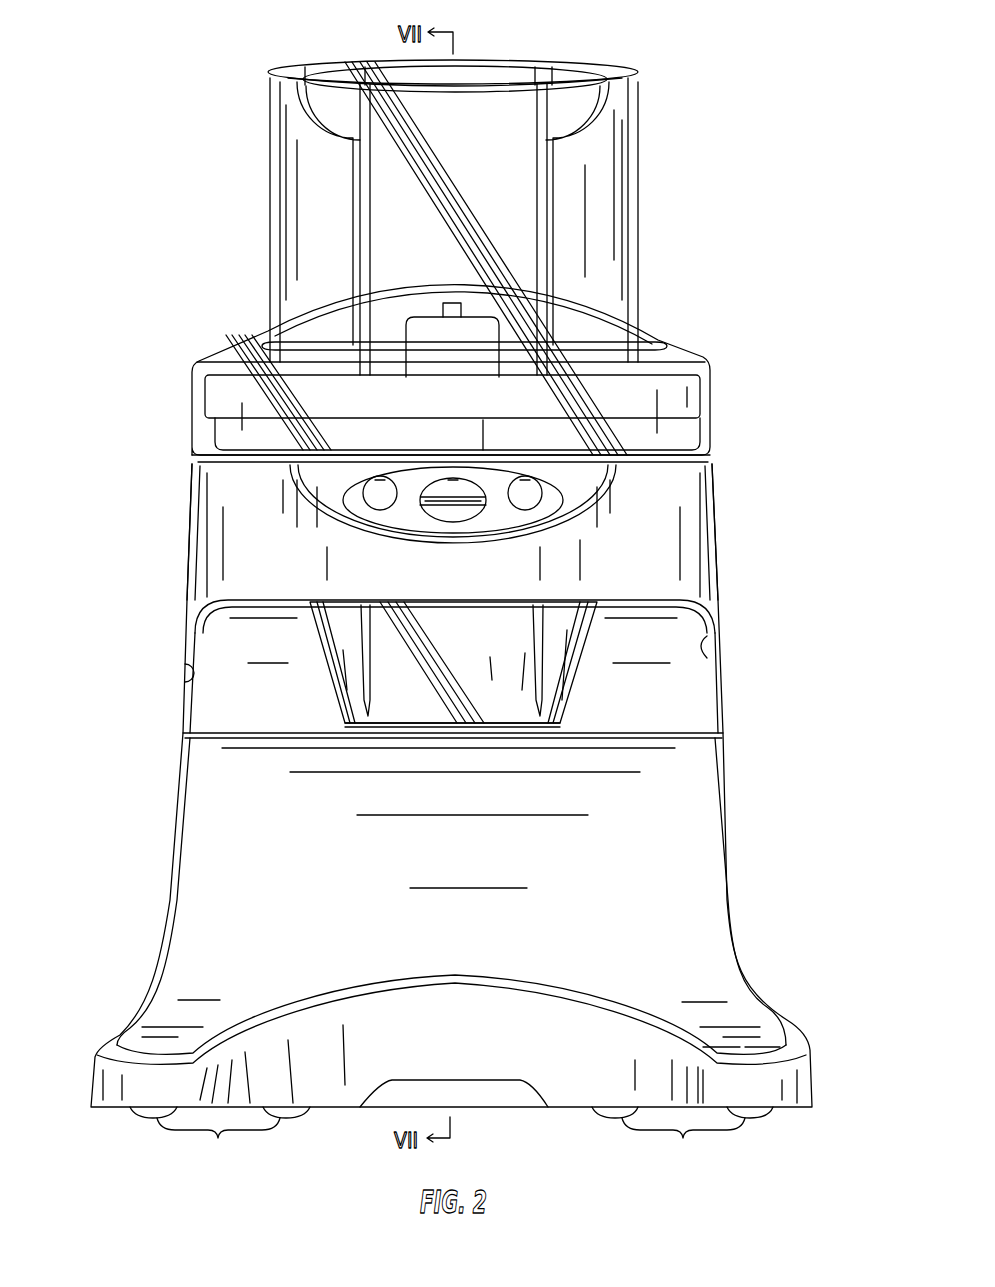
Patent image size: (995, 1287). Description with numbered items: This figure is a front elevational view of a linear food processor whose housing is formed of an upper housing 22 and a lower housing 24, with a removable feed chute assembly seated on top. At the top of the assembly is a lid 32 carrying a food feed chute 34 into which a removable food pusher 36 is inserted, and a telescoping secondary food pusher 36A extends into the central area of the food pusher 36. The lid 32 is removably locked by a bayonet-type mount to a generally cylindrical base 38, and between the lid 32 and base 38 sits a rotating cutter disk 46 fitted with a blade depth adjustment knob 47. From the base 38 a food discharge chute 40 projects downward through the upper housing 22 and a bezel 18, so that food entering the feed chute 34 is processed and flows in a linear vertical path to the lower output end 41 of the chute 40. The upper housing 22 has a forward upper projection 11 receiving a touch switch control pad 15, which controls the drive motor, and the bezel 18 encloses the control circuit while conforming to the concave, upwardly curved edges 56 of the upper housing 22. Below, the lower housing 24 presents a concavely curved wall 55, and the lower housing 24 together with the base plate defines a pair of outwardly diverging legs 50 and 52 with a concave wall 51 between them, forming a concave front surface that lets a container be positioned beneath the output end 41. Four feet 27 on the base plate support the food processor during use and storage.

The forward upper projection 11 is at (398, 562).
The touch switch control pad 15 is at (497, 512).
The bezel 18 is at (295, 708).
The upper housing 22 is at (717, 550).
The lower housing 24 is at (731, 847).
The feet 27 is at (451, 1139).
The lid 32 is at (678, 338).
The food feed chute 34 is at (640, 213).
The food pusher 36 is at (575, 62).
The secondary food pusher 36A is at (483, 73).
The base 38 is at (713, 420).
The food discharge chute 40 is at (577, 654).
The lower output end 41 is at (457, 728).
The rotating cutter disk 46 is at (680, 403).
The blade depth adjustment knob 47 is at (477, 332).
The leg 50 is at (93, 1083).
The concave wall 51 is at (473, 1045).
The leg 52 is at (812, 1078).
The concavely curved wall 55 is at (561, 857).
The curved edges 56 is at (708, 653).